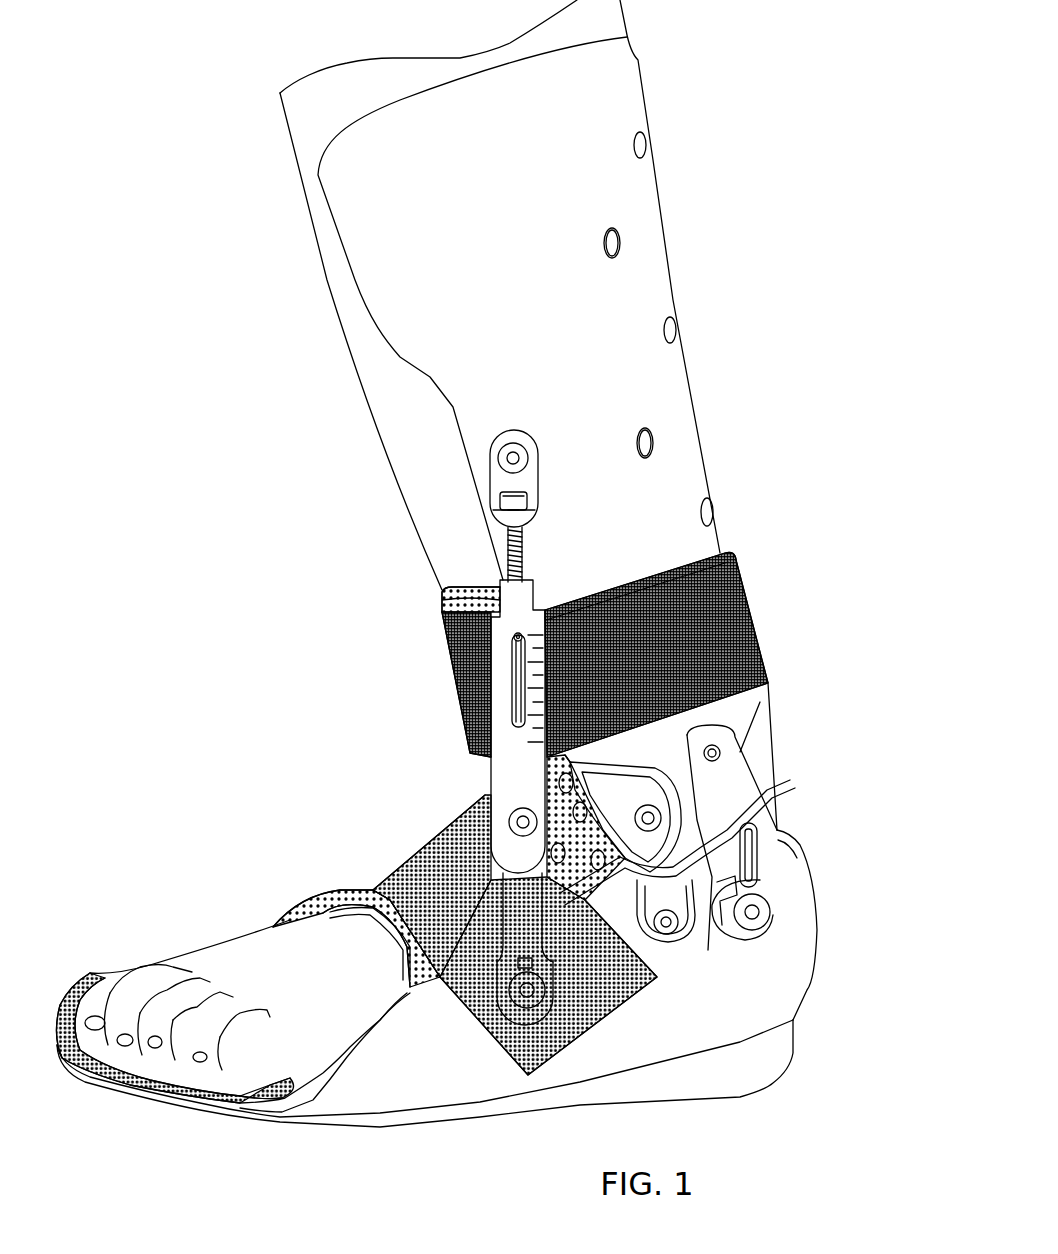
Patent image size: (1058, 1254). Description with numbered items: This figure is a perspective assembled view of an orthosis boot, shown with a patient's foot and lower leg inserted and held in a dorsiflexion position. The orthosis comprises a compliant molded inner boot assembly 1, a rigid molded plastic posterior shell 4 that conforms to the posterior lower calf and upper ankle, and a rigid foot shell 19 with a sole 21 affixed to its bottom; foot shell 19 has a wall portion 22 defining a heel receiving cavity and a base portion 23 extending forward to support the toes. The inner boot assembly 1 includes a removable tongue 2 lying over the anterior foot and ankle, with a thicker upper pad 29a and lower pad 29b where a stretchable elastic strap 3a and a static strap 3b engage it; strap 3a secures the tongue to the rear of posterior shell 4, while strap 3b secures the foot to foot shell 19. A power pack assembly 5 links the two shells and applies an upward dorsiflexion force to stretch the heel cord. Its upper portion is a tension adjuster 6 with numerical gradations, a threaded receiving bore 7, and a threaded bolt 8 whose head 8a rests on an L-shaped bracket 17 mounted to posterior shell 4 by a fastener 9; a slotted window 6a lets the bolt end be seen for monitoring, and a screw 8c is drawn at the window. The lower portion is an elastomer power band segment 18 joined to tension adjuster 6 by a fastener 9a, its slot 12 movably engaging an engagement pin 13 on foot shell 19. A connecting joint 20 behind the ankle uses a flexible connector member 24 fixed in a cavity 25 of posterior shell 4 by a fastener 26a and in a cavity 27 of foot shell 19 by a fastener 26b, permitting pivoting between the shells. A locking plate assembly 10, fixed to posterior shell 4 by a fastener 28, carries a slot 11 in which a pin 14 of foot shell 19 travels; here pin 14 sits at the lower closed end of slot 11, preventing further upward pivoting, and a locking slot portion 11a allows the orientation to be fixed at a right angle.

The molded inner boot assembly 1 is at (330, 887).
The removable tongue 2 is at (380, 908).
The stretchable elastic strap 3a is at (723, 598).
The static strap 3b is at (437, 853).
The posterior shell 4 is at (642, 190).
The power pack assembly 5 is at (513, 795).
The tension adjuster 6 is at (560, 637).
The slotted window 6a is at (518, 677).
The threaded receiving bore 7 is at (523, 578).
The threaded bolt 8 is at (523, 554).
The bolt head 8a is at (528, 499).
The set screw 8c is at (521, 634).
The fastener 9 is at (517, 456).
The fastener 9a is at (515, 818).
The locking plate assembly 10 is at (733, 789).
The slot 11 is at (743, 872).
The locking slot portion 11a is at (706, 905).
The slot 12 is at (515, 965).
The engagement pin 13 is at (530, 983).
The pin 14 is at (760, 904).
The bracket 17 is at (505, 477).
The elastomer power band segment 18 is at (530, 925).
The foot shell 19 is at (770, 972).
The connecting joint 20 is at (666, 828).
The sole 21 is at (750, 1070).
The wall portion 22 is at (422, 1080).
The base portion 23 is at (117, 1083).
The flexible connector member 24 is at (760, 815).
The cavity 25 is at (666, 857).
The fastener 26a is at (637, 817).
The fastener 26b is at (670, 936).
The cavity 27 is at (670, 909).
The fastener 28 is at (716, 750).
The upper pad 29a is at (443, 598).
The lower pad 29b is at (353, 890).